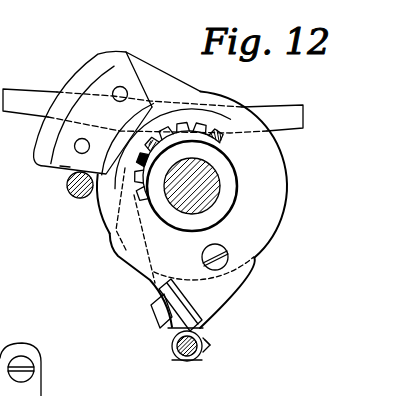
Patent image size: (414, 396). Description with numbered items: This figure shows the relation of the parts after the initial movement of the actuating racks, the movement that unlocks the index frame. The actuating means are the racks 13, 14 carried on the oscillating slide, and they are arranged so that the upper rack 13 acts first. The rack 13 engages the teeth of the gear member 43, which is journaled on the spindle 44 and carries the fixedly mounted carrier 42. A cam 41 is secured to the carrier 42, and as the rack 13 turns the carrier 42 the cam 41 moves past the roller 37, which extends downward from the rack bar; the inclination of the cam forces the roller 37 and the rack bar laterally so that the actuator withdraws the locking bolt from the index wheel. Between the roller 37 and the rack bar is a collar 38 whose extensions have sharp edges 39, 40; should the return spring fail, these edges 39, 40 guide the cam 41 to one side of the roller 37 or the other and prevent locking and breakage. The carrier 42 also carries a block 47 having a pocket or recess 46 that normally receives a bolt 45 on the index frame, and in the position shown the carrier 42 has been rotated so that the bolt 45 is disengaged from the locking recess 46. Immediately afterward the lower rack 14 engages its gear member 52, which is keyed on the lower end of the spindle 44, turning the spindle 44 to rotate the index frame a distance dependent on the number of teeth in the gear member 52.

The rack 13 is at (176, 121).
The rack 14 is at (111, 129).
The roller 37 is at (183, 361).
The collar 38 is at (200, 350).
The edge 39 is at (210, 345).
The edge 40 is at (171, 337).
The cam 41 is at (160, 321).
The carrier 42 is at (250, 236).
The gear member 43 is at (117, 231).
The spindle 44 is at (210, 185).
The bolt 45 is at (76, 198).
The recess 46 is at (65, 165).
The block 47 is at (58, 153).
The gear member 52 is at (154, 260).